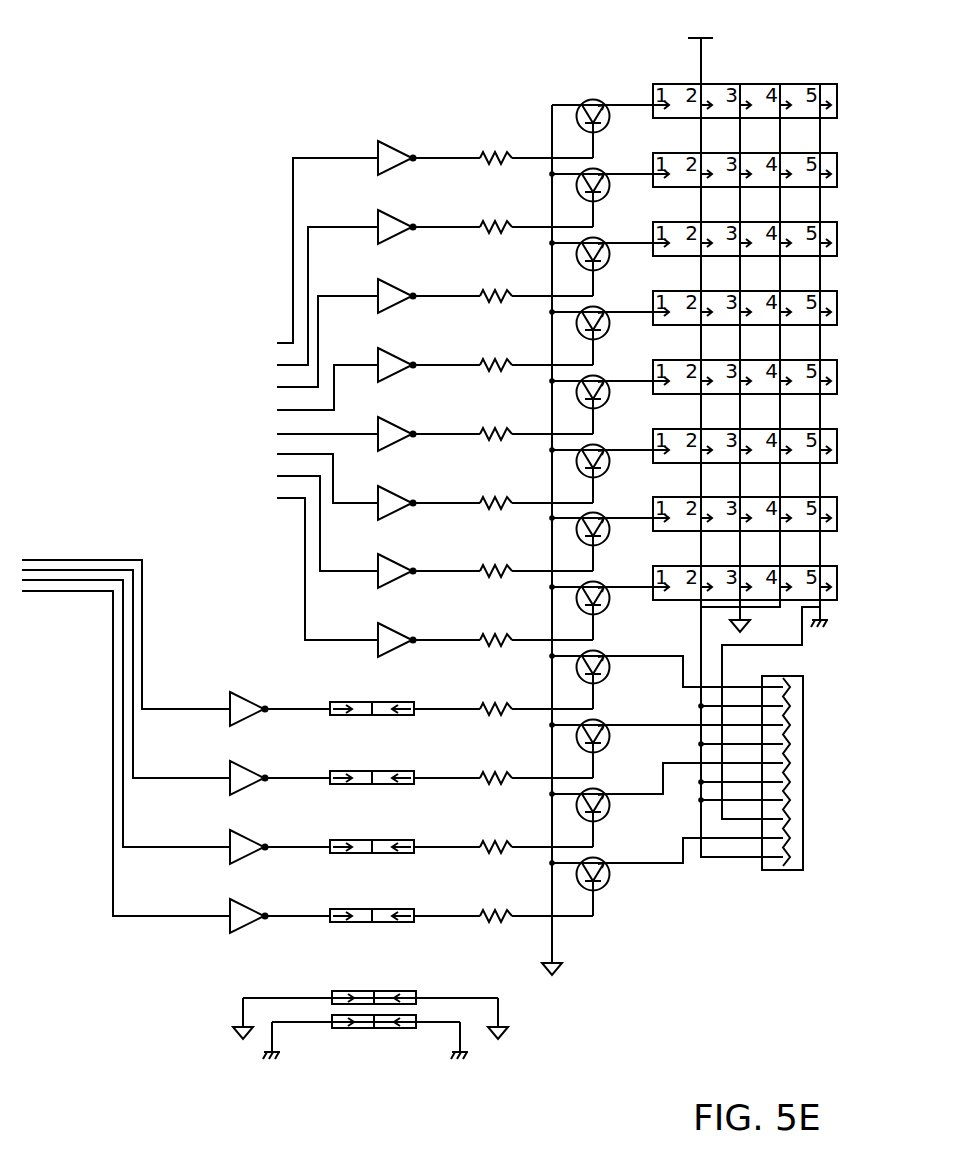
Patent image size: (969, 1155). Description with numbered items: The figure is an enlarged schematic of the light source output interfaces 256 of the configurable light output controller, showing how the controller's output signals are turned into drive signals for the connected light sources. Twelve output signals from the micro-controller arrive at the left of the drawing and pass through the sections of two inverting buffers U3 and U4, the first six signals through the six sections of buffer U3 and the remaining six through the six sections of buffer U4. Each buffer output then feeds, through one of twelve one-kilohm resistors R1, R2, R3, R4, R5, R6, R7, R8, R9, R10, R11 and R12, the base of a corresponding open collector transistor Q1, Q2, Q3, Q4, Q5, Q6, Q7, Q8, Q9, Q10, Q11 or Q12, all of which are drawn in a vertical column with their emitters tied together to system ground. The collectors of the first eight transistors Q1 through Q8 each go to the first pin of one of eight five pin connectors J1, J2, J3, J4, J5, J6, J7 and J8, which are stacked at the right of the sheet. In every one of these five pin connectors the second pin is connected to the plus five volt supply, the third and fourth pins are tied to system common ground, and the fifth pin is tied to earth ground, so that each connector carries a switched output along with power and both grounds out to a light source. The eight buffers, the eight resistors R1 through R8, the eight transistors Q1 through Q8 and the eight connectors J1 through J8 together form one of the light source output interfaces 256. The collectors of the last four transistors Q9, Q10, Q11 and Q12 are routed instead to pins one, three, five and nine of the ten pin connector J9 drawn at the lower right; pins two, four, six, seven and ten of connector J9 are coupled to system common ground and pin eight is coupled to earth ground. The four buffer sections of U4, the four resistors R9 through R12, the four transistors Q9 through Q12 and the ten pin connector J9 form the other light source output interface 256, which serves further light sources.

The light source output interfaces 256 is at (476, 535).
The open collector transistor Q1 is at (607, 129).
The open collector transistor Q2 is at (607, 198).
The open collector transistor Q3 is at (607, 267).
The open collector transistor Q4 is at (607, 336).
The open collector transistor Q5 is at (607, 405).
The open collector transistor Q6 is at (607, 474).
The open collector transistor Q7 is at (607, 542).
The open collector transistor Q8 is at (607, 611).
The open collector transistor Q9 is at (607, 680).
The open collector transistor Q10 is at (612, 749).
The open collector transistor Q11 is at (612, 818).
The open collector transistor Q12 is at (612, 887).
The resistor R1 is at (496, 159).
The resistor R2 is at (496, 228).
The resistor R3 is at (496, 297).
The resistor R4 is at (496, 366).
The resistor R5 is at (496, 435).
The resistor R6 is at (496, 504).
The resistor R7 is at (496, 572).
The resistor R8 is at (496, 641).
The resistor R9 is at (496, 710).
The resistor R10 is at (499, 779).
The resistor R11 is at (499, 848).
The resistor R12 is at (499, 917).
The five pin connector J1 is at (759, 100).
The five pin connector J2 is at (759, 169).
The five pin connector J3 is at (759, 238).
The five pin connector J4 is at (759, 307).
The five pin connector J5 is at (759, 376).
The five pin connector J6 is at (759, 445).
The five pin connector J7 is at (759, 513).
The five pin connector J8 is at (759, 582).
The ten pin connector J9 is at (786, 773).
The inverting buffer U3 is at (396, 316).
The inverting buffer U4 is at (319, 729).